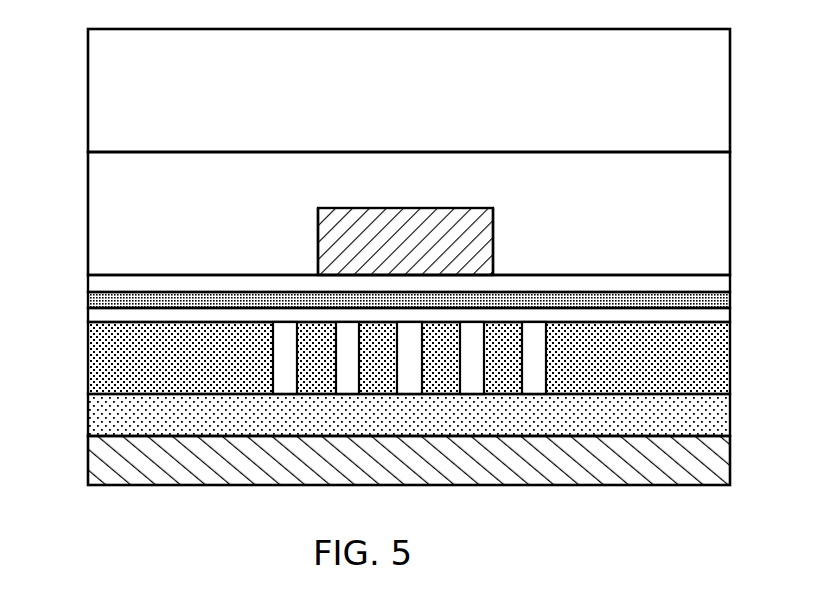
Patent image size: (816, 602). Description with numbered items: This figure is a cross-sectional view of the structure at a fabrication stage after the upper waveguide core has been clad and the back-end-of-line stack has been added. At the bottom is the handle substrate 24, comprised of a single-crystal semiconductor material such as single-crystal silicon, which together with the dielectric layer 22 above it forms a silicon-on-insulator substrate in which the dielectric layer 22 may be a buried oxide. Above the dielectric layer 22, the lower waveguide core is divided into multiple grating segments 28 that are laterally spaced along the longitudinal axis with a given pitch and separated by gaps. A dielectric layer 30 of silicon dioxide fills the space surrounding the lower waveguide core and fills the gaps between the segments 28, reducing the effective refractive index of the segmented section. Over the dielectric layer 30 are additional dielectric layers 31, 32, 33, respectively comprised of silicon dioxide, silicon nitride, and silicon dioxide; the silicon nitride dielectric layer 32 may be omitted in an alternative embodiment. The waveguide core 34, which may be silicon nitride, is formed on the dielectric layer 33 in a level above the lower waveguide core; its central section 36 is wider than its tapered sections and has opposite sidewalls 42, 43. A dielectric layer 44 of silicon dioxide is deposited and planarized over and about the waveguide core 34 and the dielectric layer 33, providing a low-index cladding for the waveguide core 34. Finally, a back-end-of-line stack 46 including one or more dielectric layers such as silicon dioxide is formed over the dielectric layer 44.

The dielectric layer 22 is at (118, 421).
The handle substrate 24 is at (118, 470).
The segments 28 is at (318, 367).
The dielectric layer 30 is at (530, 362).
The dielectric layer 31 is at (110, 318).
The dielectric layer 32 is at (713, 300).
The dielectric layer 33 is at (110, 285).
The waveguide core 34 is at (255, 198).
The central section 36 is at (425, 232).
The sidewall 42 is at (318, 253).
The sidewall 43 is at (493, 253).
The dielectric layer 44 is at (693, 246).
The back-end-of-line stack 46 is at (693, 98).